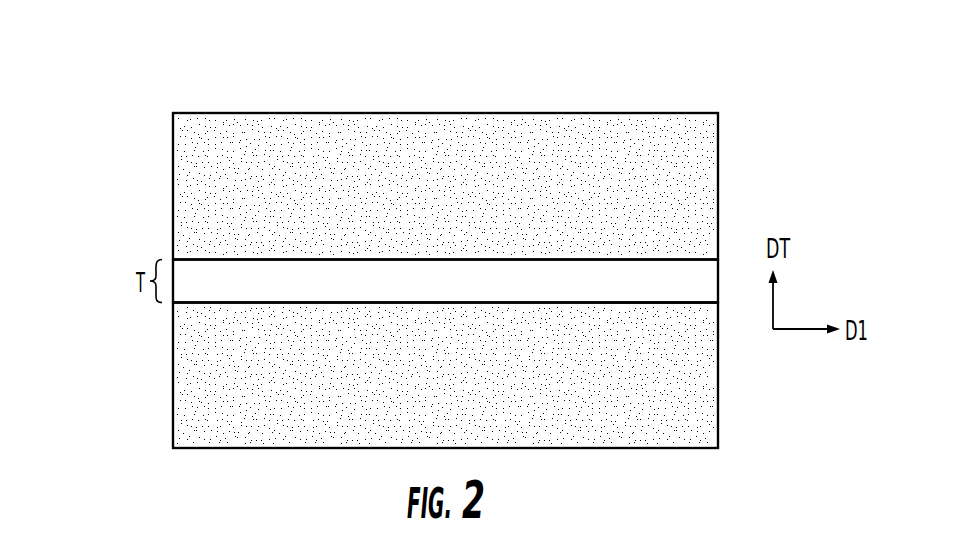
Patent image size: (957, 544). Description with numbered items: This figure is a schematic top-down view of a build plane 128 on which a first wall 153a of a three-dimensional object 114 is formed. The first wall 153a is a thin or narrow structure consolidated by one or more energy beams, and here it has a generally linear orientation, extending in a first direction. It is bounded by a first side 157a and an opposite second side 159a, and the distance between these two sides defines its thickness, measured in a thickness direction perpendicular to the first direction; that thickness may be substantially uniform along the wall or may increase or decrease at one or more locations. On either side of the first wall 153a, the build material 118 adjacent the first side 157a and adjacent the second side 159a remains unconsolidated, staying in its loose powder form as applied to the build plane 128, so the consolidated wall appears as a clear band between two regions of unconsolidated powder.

The build plane 128 is at (98, 100).
The three-dimensional object 114 is at (158, 248).
The build material 118 is at (462, 182).
The first side of the first wall 157a is at (372, 259).
The second side of the first wall 159a is at (372, 303).
The first wall 153a is at (685, 303).